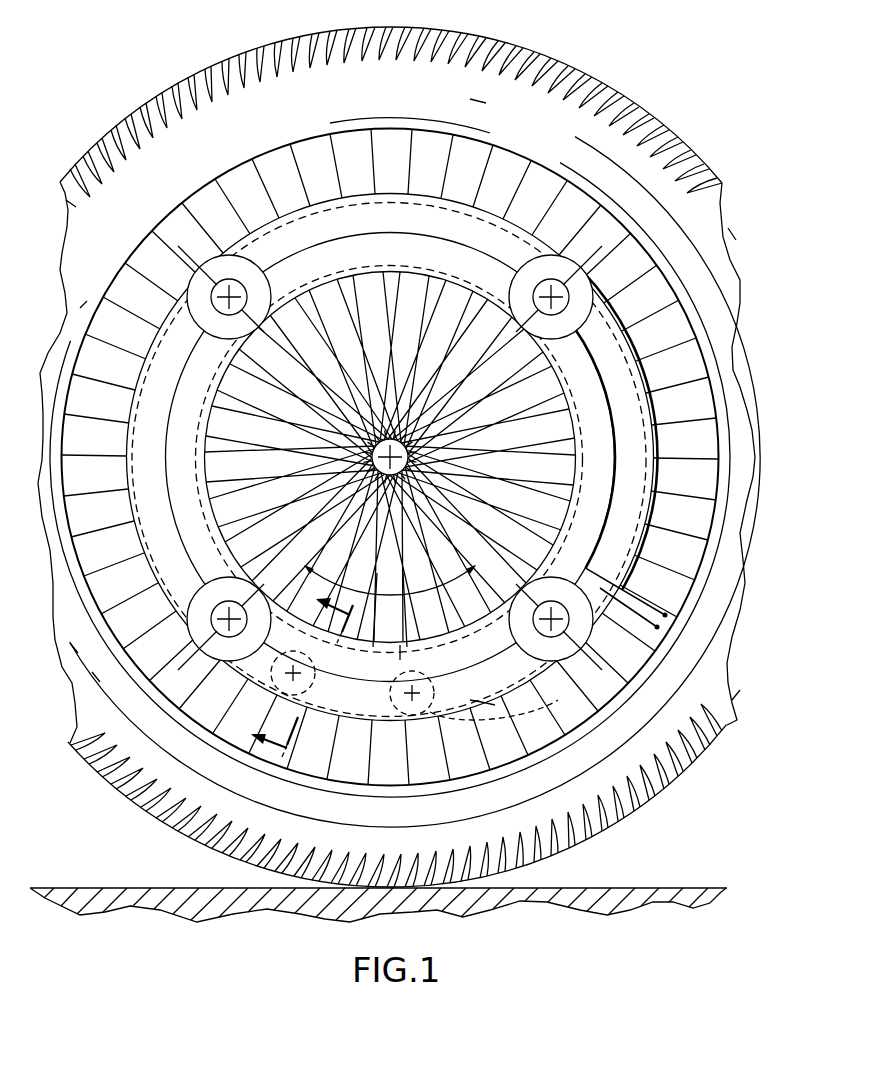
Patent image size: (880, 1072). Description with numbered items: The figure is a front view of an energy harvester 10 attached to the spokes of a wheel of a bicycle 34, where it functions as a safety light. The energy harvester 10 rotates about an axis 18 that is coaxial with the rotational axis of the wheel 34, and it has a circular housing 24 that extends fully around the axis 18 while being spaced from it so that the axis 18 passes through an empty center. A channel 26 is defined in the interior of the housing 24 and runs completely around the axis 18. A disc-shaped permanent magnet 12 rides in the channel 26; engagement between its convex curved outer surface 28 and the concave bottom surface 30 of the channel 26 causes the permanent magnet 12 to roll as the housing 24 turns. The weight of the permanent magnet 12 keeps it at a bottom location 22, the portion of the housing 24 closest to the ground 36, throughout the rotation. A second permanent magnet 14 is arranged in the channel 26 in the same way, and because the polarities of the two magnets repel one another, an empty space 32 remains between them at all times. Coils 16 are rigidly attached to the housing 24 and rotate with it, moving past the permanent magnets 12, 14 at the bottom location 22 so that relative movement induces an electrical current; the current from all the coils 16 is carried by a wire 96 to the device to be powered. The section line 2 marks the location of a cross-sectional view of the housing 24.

The energy harvester 10 is at (700, 77).
The permanent magnet 12 is at (432, 712).
The second permanent magnet 14 is at (270, 685).
The coil 16 is at (198, 268).
The axis 18 is at (433, 466).
The bottom location 22 is at (393, 590).
The housing 24 is at (640, 440).
The channel 26 is at (508, 712).
The curved outer surface 28 is at (400, 669).
The concave bottom surface 30 is at (488, 687).
The empty space 32 is at (407, 512).
The wheel of a bicycle 34 is at (112, 132).
The ground 36 is at (648, 886).
The wire 96 is at (617, 388).
The section line 2 is at (309, 682).